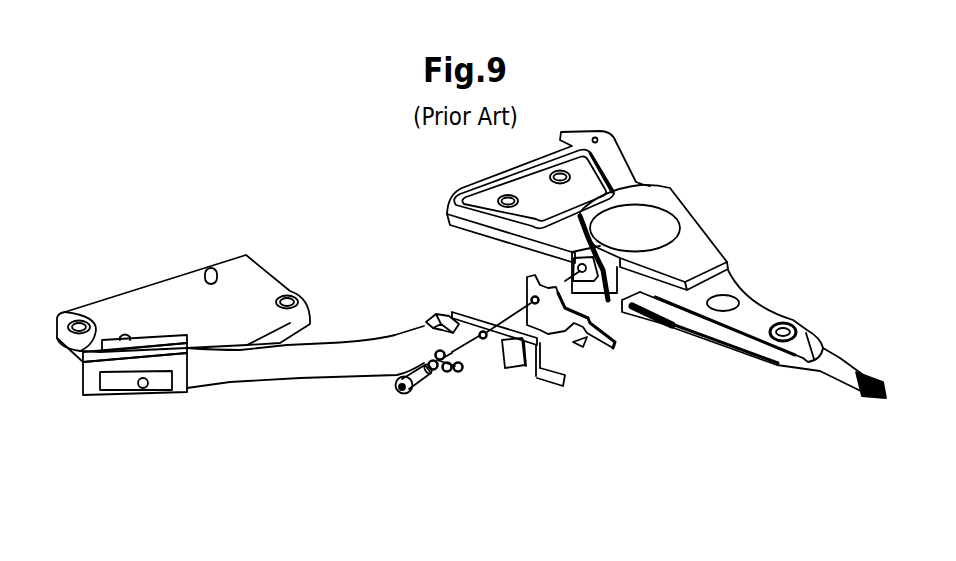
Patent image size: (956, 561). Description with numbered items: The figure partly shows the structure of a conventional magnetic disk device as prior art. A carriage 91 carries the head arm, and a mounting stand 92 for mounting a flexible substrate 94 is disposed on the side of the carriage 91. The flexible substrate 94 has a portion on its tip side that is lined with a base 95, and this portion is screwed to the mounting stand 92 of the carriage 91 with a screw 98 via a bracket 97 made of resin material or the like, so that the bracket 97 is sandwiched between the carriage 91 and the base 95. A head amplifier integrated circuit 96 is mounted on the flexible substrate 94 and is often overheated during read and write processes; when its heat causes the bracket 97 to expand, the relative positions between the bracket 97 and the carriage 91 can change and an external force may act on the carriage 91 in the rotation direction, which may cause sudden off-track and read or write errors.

The carriage 91 is at (672, 200).
The mounting stand 92 is at (573, 267).
The flexible substrate 94 is at (483, 350).
The base 95 is at (541, 349).
The head amplifier integrated circuit 96 is at (510, 360).
The bracket 97 is at (527, 290).
The screw 98 is at (398, 390).